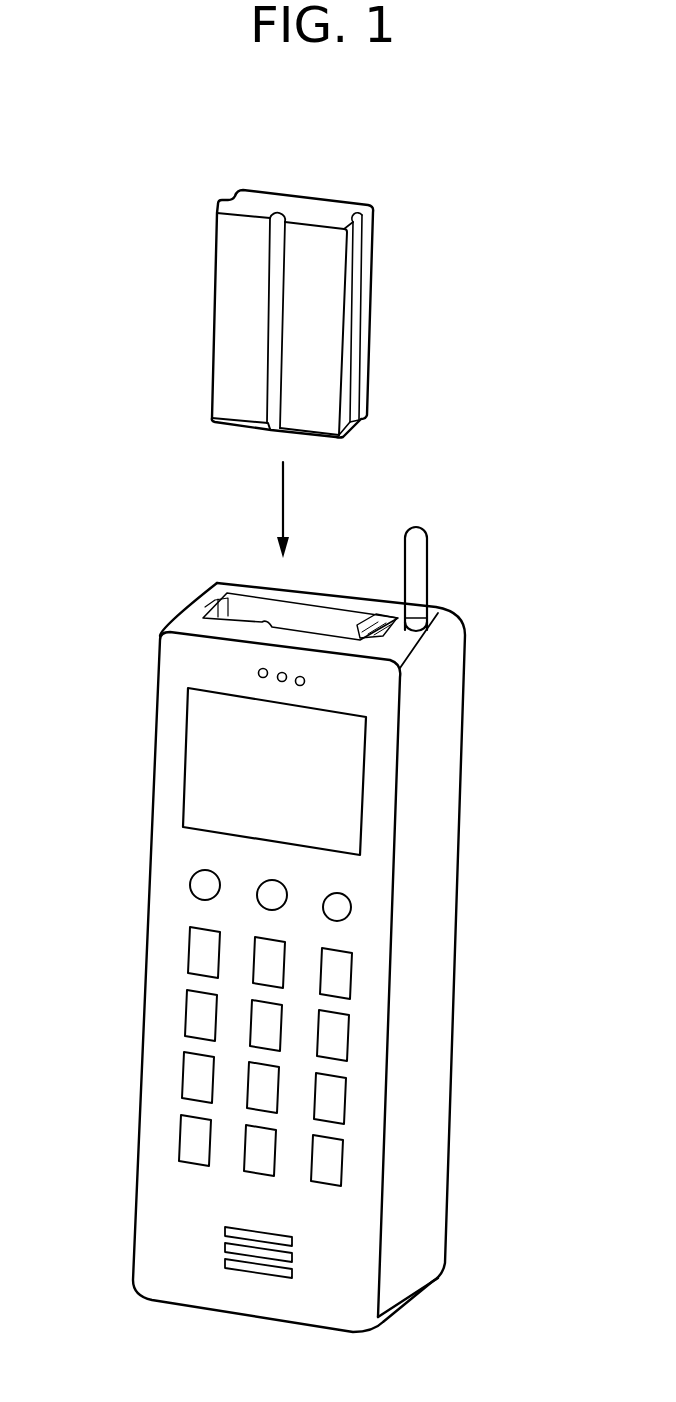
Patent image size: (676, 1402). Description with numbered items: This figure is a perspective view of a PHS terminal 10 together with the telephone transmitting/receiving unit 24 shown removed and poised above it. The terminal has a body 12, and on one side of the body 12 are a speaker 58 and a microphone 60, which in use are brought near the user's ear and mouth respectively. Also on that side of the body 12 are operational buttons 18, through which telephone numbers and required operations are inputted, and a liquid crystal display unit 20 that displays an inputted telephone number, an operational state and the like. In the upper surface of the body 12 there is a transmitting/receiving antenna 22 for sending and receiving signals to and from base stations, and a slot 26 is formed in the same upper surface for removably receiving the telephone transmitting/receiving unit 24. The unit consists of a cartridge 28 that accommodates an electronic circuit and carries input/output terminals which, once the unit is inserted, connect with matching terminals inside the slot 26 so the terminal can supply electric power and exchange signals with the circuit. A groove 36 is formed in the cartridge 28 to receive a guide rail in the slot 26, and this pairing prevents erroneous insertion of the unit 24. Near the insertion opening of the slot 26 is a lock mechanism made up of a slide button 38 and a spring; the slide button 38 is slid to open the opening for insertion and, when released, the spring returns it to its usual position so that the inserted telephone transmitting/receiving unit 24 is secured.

The PHS terminal 10 is at (334, 927).
The body 12 is at (440, 930).
The operational buttons 18 is at (202, 953).
The liquid crystal display unit 20 is at (197, 777).
The transmitting/receiving antenna 22 is at (422, 567).
The telephone transmitting/receiving unit 24 is at (291, 287).
The slot 26 is at (247, 617).
The cartridge 28 is at (230, 255).
The groove 36 is at (280, 230).
The slide button 38 is at (370, 617).
The speaker 58 is at (258, 673).
The microphone 60 is at (213, 1240).